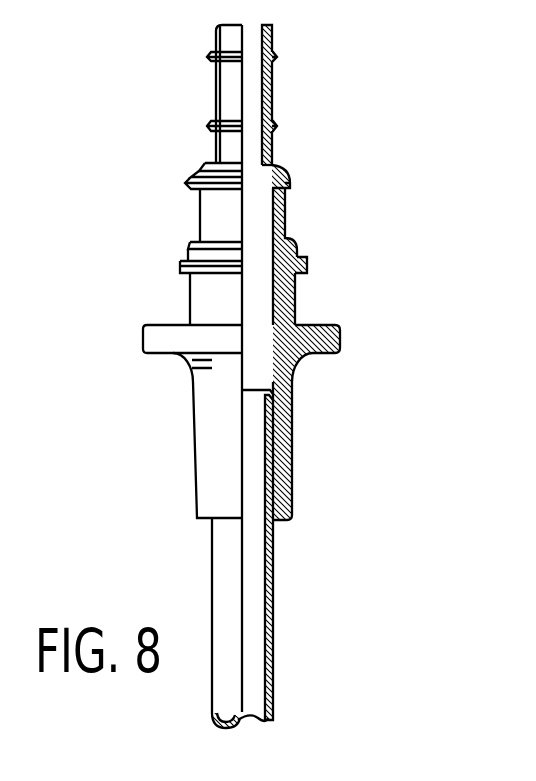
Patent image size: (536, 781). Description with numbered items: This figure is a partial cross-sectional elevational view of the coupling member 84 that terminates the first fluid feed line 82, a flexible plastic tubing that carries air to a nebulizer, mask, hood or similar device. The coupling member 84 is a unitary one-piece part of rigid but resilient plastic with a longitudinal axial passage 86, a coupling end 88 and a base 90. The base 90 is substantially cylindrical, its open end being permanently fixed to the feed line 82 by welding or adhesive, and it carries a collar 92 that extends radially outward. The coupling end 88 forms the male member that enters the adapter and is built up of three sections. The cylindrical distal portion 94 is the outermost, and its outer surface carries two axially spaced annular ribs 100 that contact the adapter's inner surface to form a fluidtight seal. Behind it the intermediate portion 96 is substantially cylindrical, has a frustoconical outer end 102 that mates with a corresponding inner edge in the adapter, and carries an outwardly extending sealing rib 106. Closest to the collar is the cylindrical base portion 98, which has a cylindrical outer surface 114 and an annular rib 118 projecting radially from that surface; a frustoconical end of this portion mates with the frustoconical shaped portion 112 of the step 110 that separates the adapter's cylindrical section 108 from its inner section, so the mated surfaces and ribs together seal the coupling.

The first fluid feed line 82 is at (275, 635).
The coupling member 84 is at (364, 282).
The axial passage 86 is at (251, 90).
The coupling end 88 is at (280, 95).
The base 90 is at (302, 461).
The collar 92 is at (143, 347).
The cylindrical distal portion 94 is at (271, 110).
The intermediate portion 96 is at (200, 203).
The cylindrical base portion 98 is at (190, 303).
The annular rib 100 is at (274, 58).
The frustoconical outer end 102 is at (203, 163).
The sealing rib 106 is at (185, 182).
The cylindrical section 108 is at (210, 215).
The step 110 is at (287, 240).
The frustoconical shaped portion 112 is at (293, 250).
The cylindrical outer surface 114 is at (200, 289).
The annular rib 118 is at (180, 268).